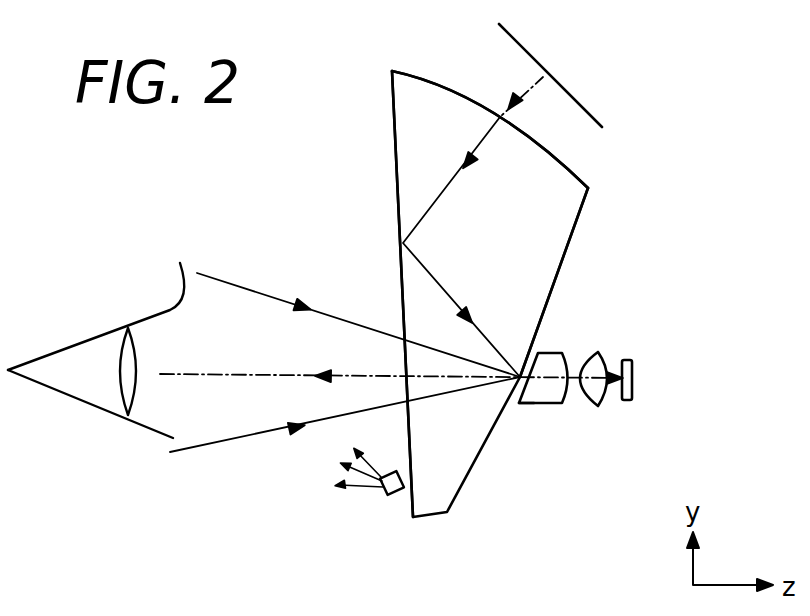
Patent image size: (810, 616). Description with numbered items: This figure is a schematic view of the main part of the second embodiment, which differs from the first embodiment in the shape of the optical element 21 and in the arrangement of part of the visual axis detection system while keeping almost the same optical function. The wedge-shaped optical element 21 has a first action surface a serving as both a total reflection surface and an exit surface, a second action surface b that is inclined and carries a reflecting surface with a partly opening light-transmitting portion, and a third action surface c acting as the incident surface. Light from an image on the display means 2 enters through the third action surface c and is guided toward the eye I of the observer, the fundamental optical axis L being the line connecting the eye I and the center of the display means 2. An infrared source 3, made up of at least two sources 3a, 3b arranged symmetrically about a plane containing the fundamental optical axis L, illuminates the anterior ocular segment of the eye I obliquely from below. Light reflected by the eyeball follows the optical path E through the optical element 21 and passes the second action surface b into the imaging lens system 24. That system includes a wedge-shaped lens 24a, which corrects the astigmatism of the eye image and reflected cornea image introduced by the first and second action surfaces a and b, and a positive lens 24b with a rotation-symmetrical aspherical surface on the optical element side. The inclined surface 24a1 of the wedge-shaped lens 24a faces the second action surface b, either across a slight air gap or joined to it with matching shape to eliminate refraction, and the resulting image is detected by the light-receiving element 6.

The display means 2 is at (523, 48).
The optical element 21 is at (415, 80).
The first action surface a is at (403, 300).
The second action surface b is at (560, 290).
The third action surface c is at (530, 135).
The fundamental optical axis L is at (430, 210).
The optical path E is at (263, 292).
The eye I is at (97, 408).
The imaging lens system 24 is at (572, 435).
The wedge-shaped lens 24a is at (550, 404).
The inclined surface 24a1 is at (519, 405).
The positive lens 24b is at (615, 408).
The light-receiving element 6 is at (626, 360).
The infrared source 3 is at (415, 509).
The infrared source 3a is at (392, 483).
The infrared source 3b is at (385, 494).